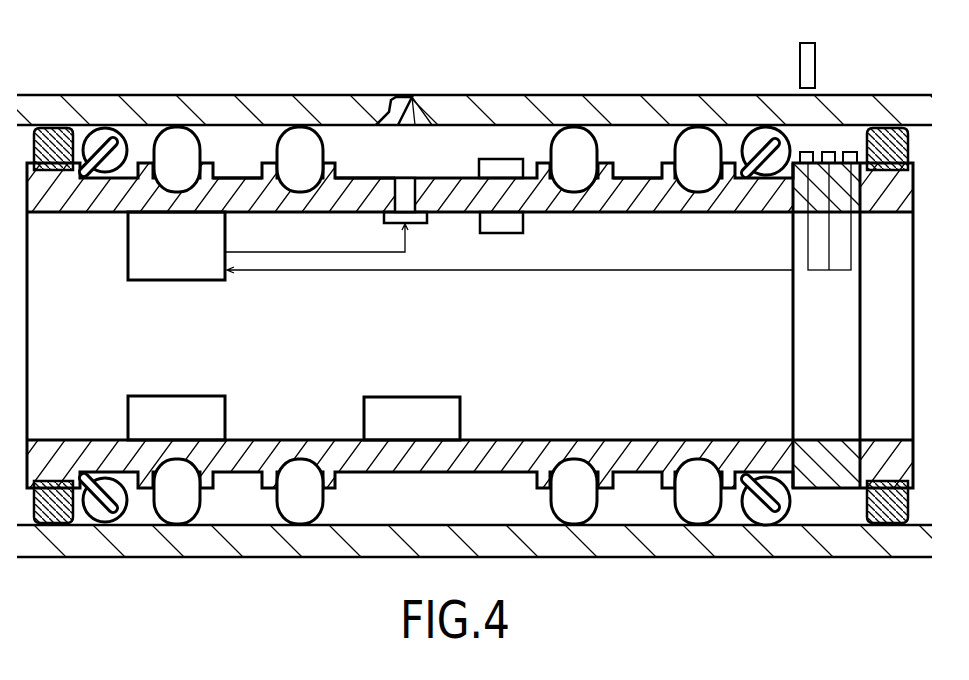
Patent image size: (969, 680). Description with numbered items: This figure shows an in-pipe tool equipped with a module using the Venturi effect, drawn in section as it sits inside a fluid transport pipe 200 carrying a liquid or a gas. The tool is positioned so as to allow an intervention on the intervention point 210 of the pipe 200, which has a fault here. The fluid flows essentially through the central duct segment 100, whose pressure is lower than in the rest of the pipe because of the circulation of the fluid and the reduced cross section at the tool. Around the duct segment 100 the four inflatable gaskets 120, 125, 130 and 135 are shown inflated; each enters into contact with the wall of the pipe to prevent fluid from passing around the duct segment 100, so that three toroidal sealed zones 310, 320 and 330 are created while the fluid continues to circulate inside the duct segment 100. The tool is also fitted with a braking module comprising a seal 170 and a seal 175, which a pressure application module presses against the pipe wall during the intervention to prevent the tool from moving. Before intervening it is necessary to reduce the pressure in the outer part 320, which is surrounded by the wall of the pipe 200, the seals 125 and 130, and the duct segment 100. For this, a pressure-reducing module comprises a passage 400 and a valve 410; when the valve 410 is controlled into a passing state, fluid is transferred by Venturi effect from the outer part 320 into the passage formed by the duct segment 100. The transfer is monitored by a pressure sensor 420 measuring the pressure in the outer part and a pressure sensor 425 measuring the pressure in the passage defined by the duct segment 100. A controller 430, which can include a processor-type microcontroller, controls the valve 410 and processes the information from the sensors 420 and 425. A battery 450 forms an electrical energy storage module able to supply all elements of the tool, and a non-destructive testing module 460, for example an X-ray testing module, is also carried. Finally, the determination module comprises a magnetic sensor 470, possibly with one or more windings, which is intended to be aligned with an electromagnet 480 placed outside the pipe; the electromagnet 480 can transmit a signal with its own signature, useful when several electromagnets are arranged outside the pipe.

The duct segment 100 is at (515, 440).
The inflatable gasket 120 is at (222, 128).
The inflatable gasket 125 is at (343, 127).
The inflatable gasket 130 is at (543, 137).
The inflatable gasket 135 is at (672, 143).
The seal 170 is at (53, 128).
The seal 175 is at (887, 127).
The fluid transport pipe 200 is at (170, 110).
The intervention point 210 is at (398, 112).
The toroidal sealed zone 310 is at (622, 153).
The outer part 320 is at (412, 141).
The toroidal sealed zone 330 is at (252, 145).
The passage 400 is at (408, 182).
The valve 410 is at (396, 219).
The pressure sensor 420 is at (492, 167).
The pressure sensor 425 is at (495, 221).
The controller 430 is at (193, 247).
The battery 450 is at (193, 430).
The non-destructive testing module 460 is at (429, 430).
The magnetic sensor 470 is at (818, 140).
The electromagnet 480 is at (815, 65).